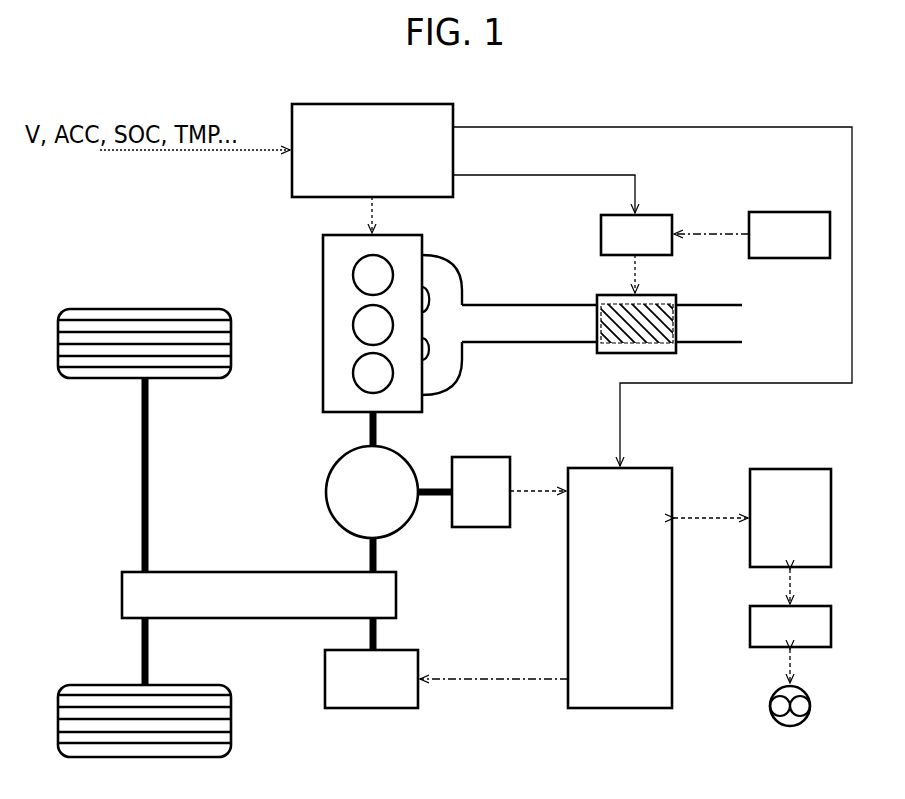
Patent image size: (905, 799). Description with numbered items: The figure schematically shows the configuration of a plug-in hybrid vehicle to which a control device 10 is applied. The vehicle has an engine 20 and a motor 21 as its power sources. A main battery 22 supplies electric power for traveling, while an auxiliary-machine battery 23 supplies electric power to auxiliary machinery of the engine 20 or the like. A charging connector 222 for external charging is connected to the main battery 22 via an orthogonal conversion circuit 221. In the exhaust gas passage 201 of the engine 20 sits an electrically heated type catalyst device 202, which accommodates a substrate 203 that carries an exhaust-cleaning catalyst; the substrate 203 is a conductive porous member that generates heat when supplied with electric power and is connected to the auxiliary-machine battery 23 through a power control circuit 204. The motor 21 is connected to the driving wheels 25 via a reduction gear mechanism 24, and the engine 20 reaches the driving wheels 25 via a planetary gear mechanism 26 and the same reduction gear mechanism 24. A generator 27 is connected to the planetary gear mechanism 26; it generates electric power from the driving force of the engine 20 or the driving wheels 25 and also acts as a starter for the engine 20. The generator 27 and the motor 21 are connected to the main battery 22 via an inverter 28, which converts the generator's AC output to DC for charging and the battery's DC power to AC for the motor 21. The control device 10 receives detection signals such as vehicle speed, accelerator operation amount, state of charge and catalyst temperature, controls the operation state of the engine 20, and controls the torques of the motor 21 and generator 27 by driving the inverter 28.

The control device 10 is at (292, 120).
The engine 20 is at (323, 278).
The exhaust gas passage 201 is at (530, 343).
The catalyst device 202 is at (598, 293).
The substrate 203 is at (636, 346).
The power control circuit 204 is at (655, 213).
The auxiliary-machine battery 23 is at (790, 212).
The main battery 22 is at (792, 469).
The orthogonal conversion circuit 221 is at (750, 625).
The charging connector 222 is at (770, 706).
The inverter 28 is at (568, 590).
The generator 27 is at (483, 528).
The planetary gear mechanism 26 is at (326, 494).
The reduction gear mechanism 24 is at (206, 572).
The motor 21 is at (325, 682).
The driving wheels 25 is at (108, 309).